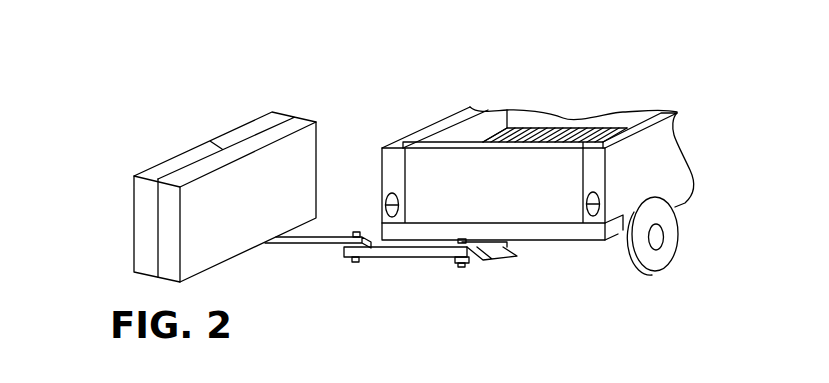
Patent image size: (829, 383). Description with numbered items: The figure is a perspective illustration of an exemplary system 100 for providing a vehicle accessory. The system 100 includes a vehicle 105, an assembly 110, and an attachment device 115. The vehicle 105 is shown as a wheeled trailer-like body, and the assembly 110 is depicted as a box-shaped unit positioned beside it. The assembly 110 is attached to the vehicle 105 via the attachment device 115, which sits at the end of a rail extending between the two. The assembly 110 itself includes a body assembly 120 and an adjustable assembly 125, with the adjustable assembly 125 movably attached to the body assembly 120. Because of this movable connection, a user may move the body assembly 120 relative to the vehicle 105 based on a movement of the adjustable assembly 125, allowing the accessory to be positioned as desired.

The system 100 is at (453, 82).
The vehicle 105 is at (583, 97).
The assembly 110 is at (128, 203).
The body assembly 120 is at (212, 128).
The adjustable assembly 125 is at (358, 272).
The attachment device 115 is at (513, 260).